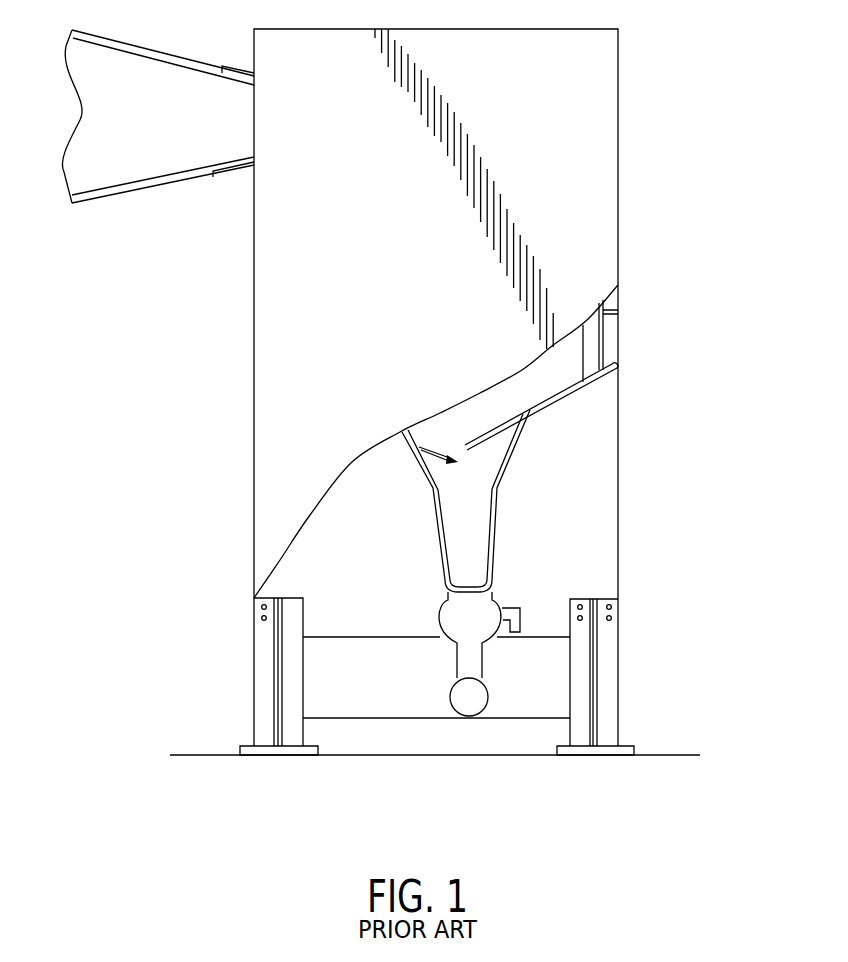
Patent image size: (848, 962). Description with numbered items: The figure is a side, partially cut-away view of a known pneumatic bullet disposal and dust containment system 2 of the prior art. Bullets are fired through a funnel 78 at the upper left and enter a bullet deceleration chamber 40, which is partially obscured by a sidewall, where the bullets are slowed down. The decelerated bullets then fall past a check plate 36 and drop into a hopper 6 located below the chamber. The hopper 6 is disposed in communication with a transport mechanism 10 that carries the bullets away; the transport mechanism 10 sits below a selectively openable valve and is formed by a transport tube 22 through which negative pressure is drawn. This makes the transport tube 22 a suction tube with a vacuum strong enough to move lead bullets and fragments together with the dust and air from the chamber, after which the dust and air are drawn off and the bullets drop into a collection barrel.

The dust containment system 2 is at (720, 60).
The hopper 6 is at (477, 515).
The transport mechanism 10 is at (412, 666).
The transport tube 22 is at (468, 697).
The check plate 36 is at (422, 463).
The bullet deceleration chamber 40 is at (388, 258).
The funnel 78 is at (166, 165).